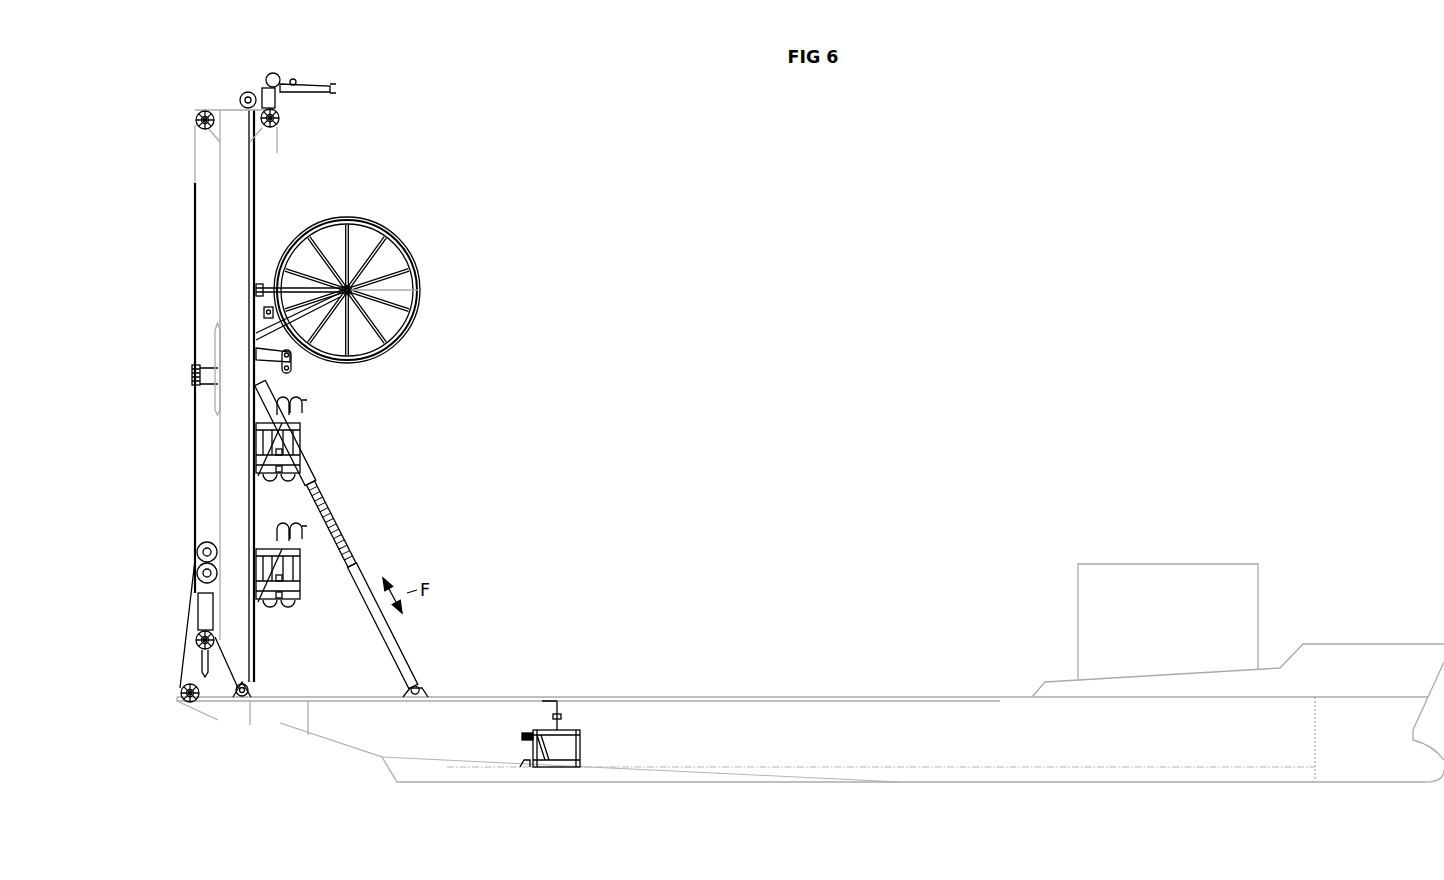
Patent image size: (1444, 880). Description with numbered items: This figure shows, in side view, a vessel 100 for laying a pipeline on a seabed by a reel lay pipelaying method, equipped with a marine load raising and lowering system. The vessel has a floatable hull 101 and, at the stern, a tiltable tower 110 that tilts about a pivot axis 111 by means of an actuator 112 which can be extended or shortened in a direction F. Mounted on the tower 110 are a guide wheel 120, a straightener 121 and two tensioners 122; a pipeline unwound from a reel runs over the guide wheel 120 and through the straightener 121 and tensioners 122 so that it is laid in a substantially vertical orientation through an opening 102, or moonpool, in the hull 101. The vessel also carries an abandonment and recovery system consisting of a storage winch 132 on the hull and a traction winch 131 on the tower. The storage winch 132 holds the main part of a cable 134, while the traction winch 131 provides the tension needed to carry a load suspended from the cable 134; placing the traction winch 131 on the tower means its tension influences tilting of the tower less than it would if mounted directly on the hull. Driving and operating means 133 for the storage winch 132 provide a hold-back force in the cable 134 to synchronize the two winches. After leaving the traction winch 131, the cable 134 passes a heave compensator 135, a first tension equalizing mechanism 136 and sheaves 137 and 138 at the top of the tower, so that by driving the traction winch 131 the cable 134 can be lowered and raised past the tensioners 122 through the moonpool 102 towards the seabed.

The vessel 100 is at (817, 455).
The floatable hull 101 is at (952, 775).
The opening 102 is at (273, 732).
The tiltable tower 110 is at (240, 630).
The pivot axis 111 is at (247, 688).
The actuator 112 is at (353, 558).
The guide wheel 120 is at (400, 253).
The straightener 121 is at (290, 363).
The tensioners 122 is at (288, 533).
The traction winch 131 is at (199, 549).
The storage winch 132 is at (568, 742).
The driving means and operating means 133 is at (523, 735).
The cable 134 is at (430, 701).
The heave compensator 135 is at (177, 613).
The first tension equalizing mechanism 136 is at (187, 357).
The sheave 137 is at (207, 117).
The sheave 138 is at (280, 117).